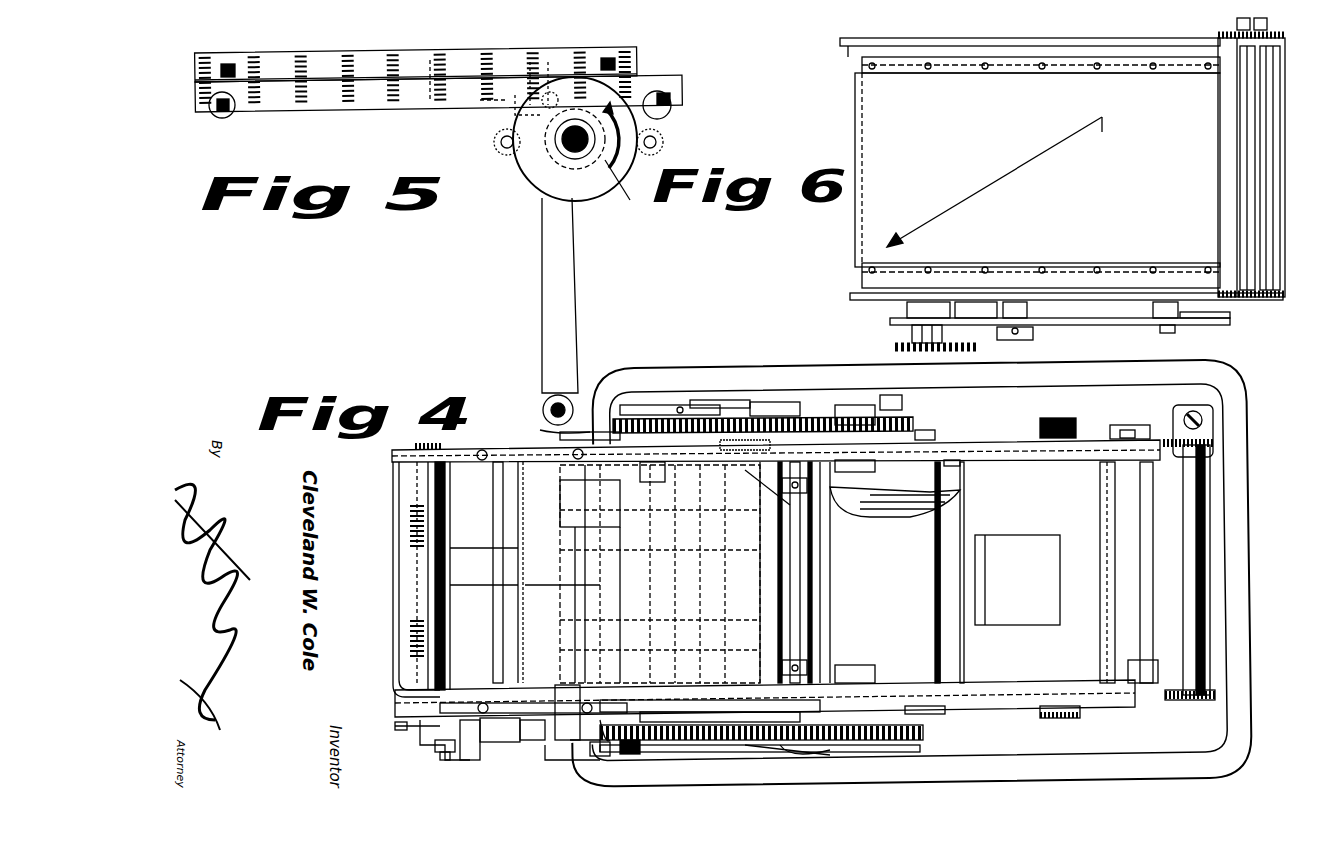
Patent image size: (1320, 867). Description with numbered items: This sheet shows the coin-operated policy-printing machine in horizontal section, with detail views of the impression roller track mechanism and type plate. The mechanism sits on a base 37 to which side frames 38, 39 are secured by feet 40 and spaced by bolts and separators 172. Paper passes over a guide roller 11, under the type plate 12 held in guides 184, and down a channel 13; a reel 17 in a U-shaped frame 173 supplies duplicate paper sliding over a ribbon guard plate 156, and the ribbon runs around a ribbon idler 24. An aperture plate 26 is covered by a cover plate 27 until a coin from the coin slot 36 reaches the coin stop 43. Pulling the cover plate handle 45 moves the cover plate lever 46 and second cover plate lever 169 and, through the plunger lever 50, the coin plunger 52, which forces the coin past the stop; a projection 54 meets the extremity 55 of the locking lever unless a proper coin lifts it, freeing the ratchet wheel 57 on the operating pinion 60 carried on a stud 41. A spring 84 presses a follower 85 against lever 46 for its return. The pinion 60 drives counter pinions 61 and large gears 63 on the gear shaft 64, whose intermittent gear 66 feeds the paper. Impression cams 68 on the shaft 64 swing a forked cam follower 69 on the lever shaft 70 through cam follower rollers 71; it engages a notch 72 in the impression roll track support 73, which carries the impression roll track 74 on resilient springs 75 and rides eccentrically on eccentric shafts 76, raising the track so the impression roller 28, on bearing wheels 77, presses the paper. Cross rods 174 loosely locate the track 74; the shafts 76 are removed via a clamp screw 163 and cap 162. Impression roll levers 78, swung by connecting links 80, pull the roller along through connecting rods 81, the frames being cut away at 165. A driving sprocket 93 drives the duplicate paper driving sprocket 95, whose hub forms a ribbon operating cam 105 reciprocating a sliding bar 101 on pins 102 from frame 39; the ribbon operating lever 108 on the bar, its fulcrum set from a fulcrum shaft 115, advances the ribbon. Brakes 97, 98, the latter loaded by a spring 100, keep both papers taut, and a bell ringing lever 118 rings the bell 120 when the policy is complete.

In FIG. 6, the guide roller 11 is at (1262, 195).
In FIG. 4, the guide roller 11 is at (1212, 600).
In FIG. 6, the type plate 12 is at (870, 225).
In FIG. 4, the channel 13 is at (620, 565).
In FIG. 4, the reel 17 is at (497, 568).
In FIG. 6, the ribbon idler 24 is at (1240, 166).
In FIG. 4, the aperture plate 26 is at (655, 470).
In FIG. 4, the cover plate 27 is at (597, 490).
In FIG. 4, the impression roller 28 is at (770, 645).
In FIG. 4, the coin slot 36 is at (440, 756).
In FIG. 4, the base 37 is at (1247, 540).
In FIG. 6, the side frame 38 is at (995, 40).
In FIG. 4, the side frame 38 is at (990, 706).
In FIG. 6, the side frame 39 is at (870, 302).
In FIG. 4, the side frame 39 is at (1010, 412).
In FIG. 4, the feet 40 is at (1202, 420).
In FIG. 4, the stud 41 is at (593, 760).
In FIG. 4, the coin stop 43 is at (580, 745).
In FIG. 4, the cover plate handle 45 is at (570, 715).
In FIG. 4, the cover plate lever 46 is at (540, 742).
In FIG. 4, the plunger lever 50 is at (498, 745).
In FIG. 4, the coin plunger 52 is at (470, 765).
In FIG. 4, the projection 54 is at (590, 700).
In FIG. 4, the extremity 55 is at (560, 762).
In FIG. 4, the ratchet wheel 57 is at (625, 752).
In FIG. 4, the operating pinion 60 is at (640, 732).
In FIG. 4, the counter pinions 61 is at (640, 470).
In FIG. 4, the large gear 63 is at (790, 435).
In FIG. 5, the gear shaft 64 is at (568, 148).
In FIG. 4, the gear shaft 64 is at (802, 603).
In FIG. 4, the intermittent gear 66 is at (740, 748).
In FIG. 5, the impression cams 68 is at (612, 150).
In FIG. 4, the impression cams 68 is at (845, 470).
In FIG. 5, the cam follower 69 is at (552, 265).
In FIG. 4, the cam follower 69 is at (902, 420).
In FIG. 5, the lever shaft 70 is at (552, 400).
In FIG. 4, the lever shaft 70 is at (835, 630).
In FIG. 5, the cam follower rollers 71 is at (503, 148).
In FIG. 4, the cam follower rollers 71 is at (875, 478).
In FIG. 5, the notch 72 is at (505, 112).
In FIG. 5, the impression roll track support 73 is at (402, 105).
In FIG. 5, the impression roll track 74 is at (365, 55).
In FIG. 4, the impression roll track 74 is at (980, 465).
In FIG. 5, the resilient springs 75 is at (480, 75).
In FIG. 5, the eccentric shafts 76 is at (222, 116).
In FIG. 4, the eccentric shafts 76 is at (1130, 513).
In FIG. 4, the bearing wheels 77 is at (785, 505).
In FIG. 4, the impression roll levers 78 is at (940, 440).
In FIG. 4, the connecting links 80 is at (742, 420).
In FIG. 4, the connecting rod 81 is at (720, 470).
In FIG. 4, the spring 84 is at (395, 727).
In FIG. 4, the follower 85 is at (425, 738).
In FIG. 4, the driving sprocket 93 is at (690, 435).
In FIG. 6, the duplicate paper driving sprocket 95 is at (915, 338).
In FIG. 4, the brake 97 is at (1035, 600).
In FIG. 4, the brake 98 is at (410, 628).
In FIG. 4, the spring 100 is at (410, 527).
In FIG. 6, the sliding bar 101 is at (1100, 325).
In FIG. 6, the pins 102 is at (1162, 330).
In FIG. 6, the ribbon operating cam 105 is at (895, 321).
In FIG. 6, the ribbon operating lever 108 is at (1215, 316).
In FIG. 6, the fulcrum shaft 115 is at (1000, 330).
In FIG. 4, the bell ringing lever 118 is at (855, 515).
In FIG. 4, the bell 120 is at (945, 508).
In FIG. 4, the ribbon guard plate 156 is at (600, 586).
In FIG. 4, the cap 162 is at (1113, 430).
In FIG. 4, the clamp screw 163 is at (1133, 430).
In FIG. 4, the cut-away portion 165 is at (1040, 712).
In FIG. 4, the second cover plate lever 169 is at (560, 438).
In FIG. 4, the bolts and separators 172 is at (445, 588).
In FIG. 4, the U-shaped frames 173 is at (396, 672).
In FIG. 5, the cross rods 174 is at (232, 58).
In FIG. 4, the cross rods 174 is at (1135, 675).
In FIG. 6, the guides 184 is at (993, 52).